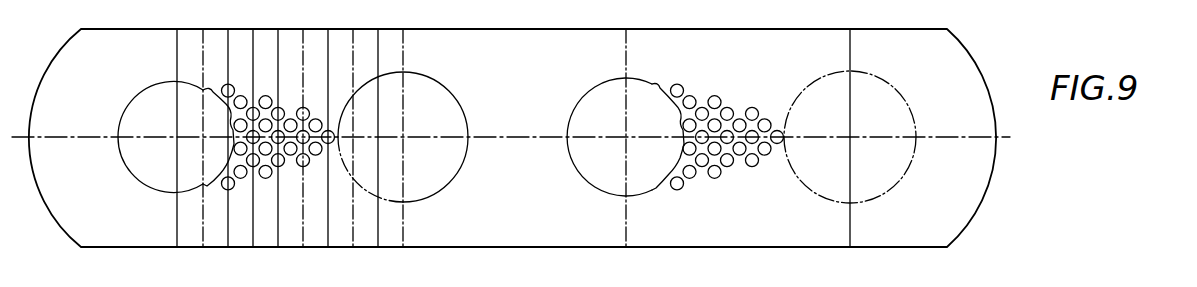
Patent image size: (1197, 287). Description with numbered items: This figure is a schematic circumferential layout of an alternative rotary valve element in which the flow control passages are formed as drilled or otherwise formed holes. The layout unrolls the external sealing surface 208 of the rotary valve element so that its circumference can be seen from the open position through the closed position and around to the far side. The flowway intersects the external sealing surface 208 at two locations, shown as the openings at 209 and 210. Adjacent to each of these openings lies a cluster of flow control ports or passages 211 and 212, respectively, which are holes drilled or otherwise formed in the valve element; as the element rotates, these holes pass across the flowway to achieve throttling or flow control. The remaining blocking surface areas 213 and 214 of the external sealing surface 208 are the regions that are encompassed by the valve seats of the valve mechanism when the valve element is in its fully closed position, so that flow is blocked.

The external sealing surface 208 is at (528, 48).
The flowway intersection 209 is at (145, 102).
The flowway intersection 210 is at (593, 178).
The flow control ports or passages 211 is at (266, 96).
The flow control ports or passages 212 is at (740, 118).
The blocking surface area 213 is at (455, 173).
The blocking surface area 214 is at (888, 178).